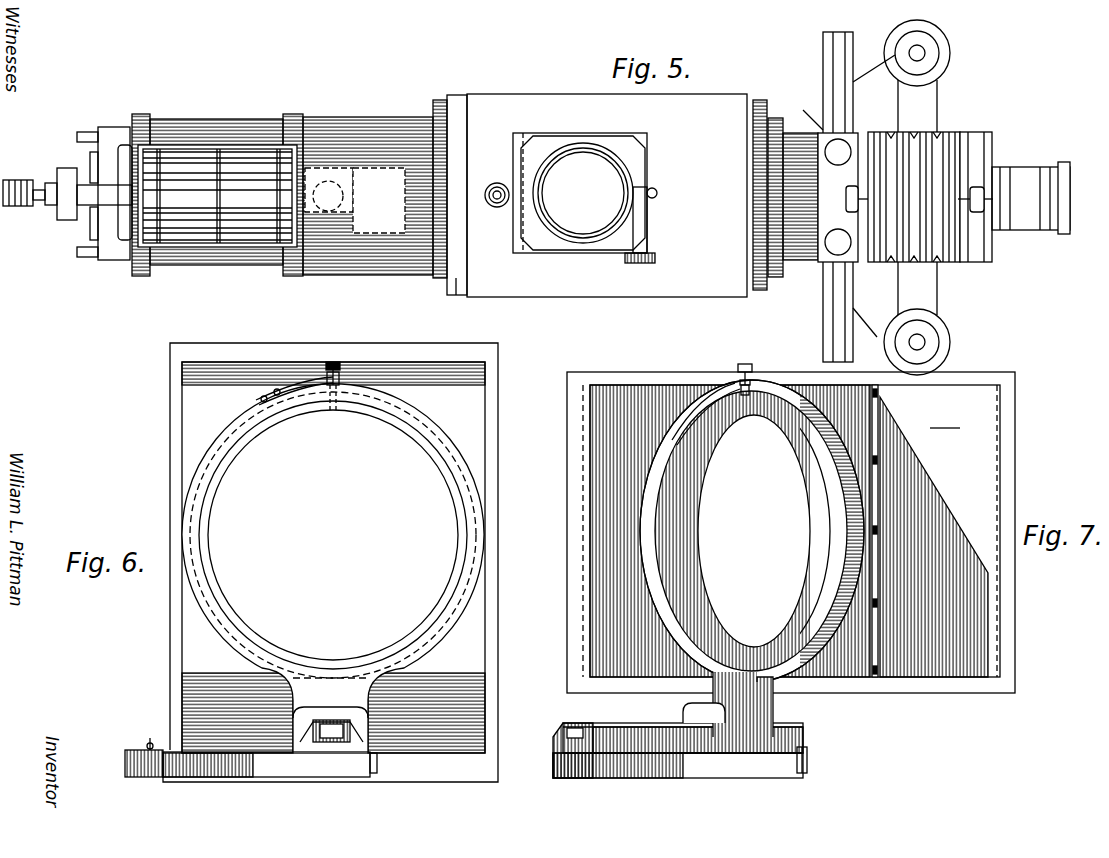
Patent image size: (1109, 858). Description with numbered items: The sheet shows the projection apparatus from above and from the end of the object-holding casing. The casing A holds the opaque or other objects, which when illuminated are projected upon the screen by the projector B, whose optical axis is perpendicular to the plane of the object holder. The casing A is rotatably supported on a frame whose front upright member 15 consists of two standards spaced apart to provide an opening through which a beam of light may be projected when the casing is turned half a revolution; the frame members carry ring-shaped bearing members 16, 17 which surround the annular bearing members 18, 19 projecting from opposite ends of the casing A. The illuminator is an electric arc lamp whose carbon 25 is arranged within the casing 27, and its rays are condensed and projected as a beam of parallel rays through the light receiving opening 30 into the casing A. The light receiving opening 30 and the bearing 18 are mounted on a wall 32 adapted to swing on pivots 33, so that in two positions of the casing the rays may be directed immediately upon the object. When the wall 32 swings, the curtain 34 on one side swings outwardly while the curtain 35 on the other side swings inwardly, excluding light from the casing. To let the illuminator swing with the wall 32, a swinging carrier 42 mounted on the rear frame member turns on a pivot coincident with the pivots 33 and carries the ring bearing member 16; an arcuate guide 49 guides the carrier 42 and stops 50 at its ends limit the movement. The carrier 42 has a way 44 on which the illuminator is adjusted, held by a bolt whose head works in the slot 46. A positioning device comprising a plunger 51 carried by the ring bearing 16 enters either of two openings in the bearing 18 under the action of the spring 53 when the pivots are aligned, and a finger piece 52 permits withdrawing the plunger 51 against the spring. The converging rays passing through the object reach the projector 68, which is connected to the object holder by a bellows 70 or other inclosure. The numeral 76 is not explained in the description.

In FIG. 5, the front upright member 15 is at (922, 50).
In FIG. 6, the bearing member 16 is at (408, 412).
In FIG. 7, the bearing member 16 is at (795, 414).
In FIG. 5, the bearing member 17 is at (770, 92).
In FIG. 5, the ring bearing member 18 is at (457, 258).
In FIG. 6, the ring bearing member 18 is at (416, 434).
In FIG. 7, the ring bearing member 18 is at (787, 430).
In FIG. 5, the ring bearing member 19 is at (775, 117).
In FIG. 5, the carbon 25 is at (67, 194).
In FIG. 5, the casing 27 is at (232, 266).
In FIG. 6, the light receiving opening 30 is at (292, 418).
In FIG. 7, the light receiving opening 30 is at (753, 415).
In FIG. 7, the wall 32 is at (843, 705).
In FIG. 5, the pivots 33 is at (456, 295).
In FIG. 6, the pivots 33 is at (483, 528).
In FIG. 6, the curtain 34 is at (333, 713).
In FIG. 7, the curtain 34 is at (946, 420).
In FIG. 6, the curtain 35 is at (462, 375).
In FIG. 7, the curtain 35 is at (623, 397).
In FIG. 6, the swinging carrier 42 is at (372, 752).
In FIG. 7, the swinging carrier 42 is at (793, 744).
In FIG. 6, the way 44 is at (362, 722).
In FIG. 7, the way 44 is at (640, 733).
In FIG. 6, the slot 46 is at (312, 734).
In FIG. 7, the slot 46 is at (590, 727).
In FIG. 7, the arcuate guide 49 is at (678, 765).
In FIG. 6, the stops 50 is at (398, 762).
In FIG. 7, the stops 50 is at (807, 758).
In FIG. 5, the plunger 51 is at (846, 170).
In FIG. 6, the plunger 51 is at (343, 384).
In FIG. 7, the plunger 51 is at (756, 383).
In FIG. 6, the finger piece 52 is at (340, 366).
In FIG. 7, the finger piece 52 is at (745, 362).
In FIG. 6, the spring 53 is at (330, 372).
In FIG. 7, the spring 53 is at (727, 380).
In FIG. 5, the projector 68 is at (1015, 232).
In FIG. 5, the bellows 70 is at (945, 262).
In FIG. 5, the collar 76 is at (440, 283).
In FIG. 5, the casing A is at (607, 195).
In FIG. 6, the casing A is at (500, 472).
In FIG. 7, the casing A is at (1006, 634).
In FIG. 5, the projector B is at (580, 193).